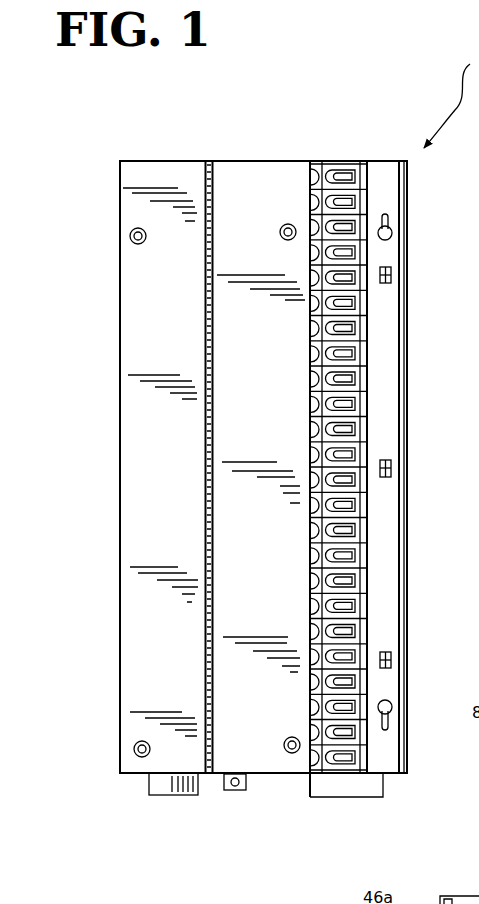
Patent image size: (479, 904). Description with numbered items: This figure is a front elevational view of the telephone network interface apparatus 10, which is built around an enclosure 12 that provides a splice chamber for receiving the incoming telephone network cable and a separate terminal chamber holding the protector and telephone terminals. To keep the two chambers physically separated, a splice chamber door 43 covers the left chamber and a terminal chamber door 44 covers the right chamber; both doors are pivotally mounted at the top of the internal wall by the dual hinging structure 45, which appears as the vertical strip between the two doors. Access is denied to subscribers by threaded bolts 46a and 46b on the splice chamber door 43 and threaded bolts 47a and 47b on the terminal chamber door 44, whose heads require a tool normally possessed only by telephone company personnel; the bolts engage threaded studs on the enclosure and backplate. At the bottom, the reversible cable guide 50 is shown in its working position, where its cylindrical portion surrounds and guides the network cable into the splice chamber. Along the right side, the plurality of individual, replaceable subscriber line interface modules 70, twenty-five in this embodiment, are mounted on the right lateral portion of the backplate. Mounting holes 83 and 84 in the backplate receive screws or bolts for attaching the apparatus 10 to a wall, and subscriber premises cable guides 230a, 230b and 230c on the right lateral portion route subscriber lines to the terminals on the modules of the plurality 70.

The telephone network interface apparatus 10 is at (478, 344).
The enclosure 12 is at (258, 128).
The splice chamber door 43 is at (175, 447).
The terminal chamber door 44 is at (277, 707).
The dual hinging structure 45 is at (195, 318).
The threaded bolt 46a is at (130, 233).
The threaded bolt 46b is at (135, 752).
The threaded bolt 47a is at (290, 223).
The threaded bolt 47b is at (294, 765).
The cable guide 50 is at (172, 796).
The plurality of subscriber line interface modules 70 is at (372, 514).
The mounting hole 83 is at (392, 711).
The mounting hole 84 is at (392, 233).
The subscriber premises cable guide 230a is at (391, 273).
The subscriber premises cable guide 230b is at (391, 468).
The subscriber premises cable guide 230c is at (391, 659).